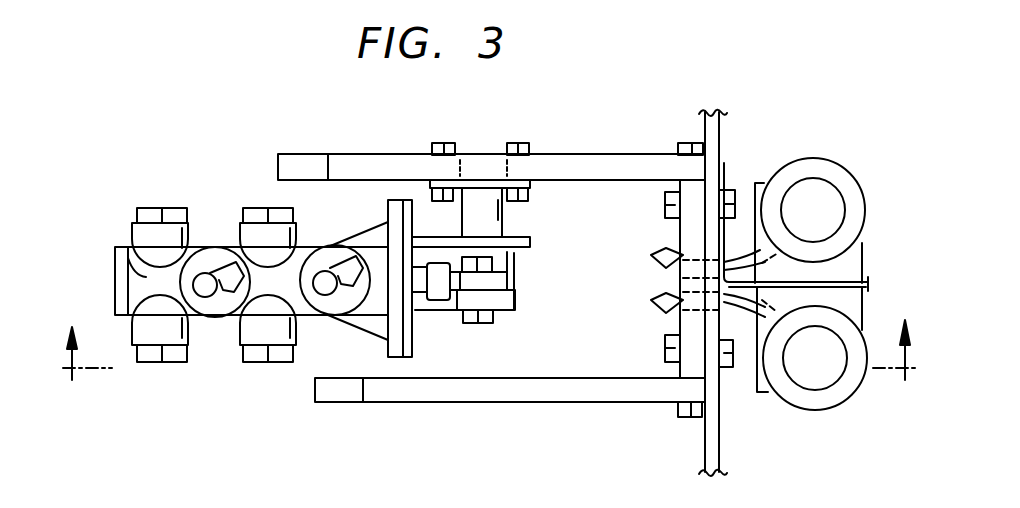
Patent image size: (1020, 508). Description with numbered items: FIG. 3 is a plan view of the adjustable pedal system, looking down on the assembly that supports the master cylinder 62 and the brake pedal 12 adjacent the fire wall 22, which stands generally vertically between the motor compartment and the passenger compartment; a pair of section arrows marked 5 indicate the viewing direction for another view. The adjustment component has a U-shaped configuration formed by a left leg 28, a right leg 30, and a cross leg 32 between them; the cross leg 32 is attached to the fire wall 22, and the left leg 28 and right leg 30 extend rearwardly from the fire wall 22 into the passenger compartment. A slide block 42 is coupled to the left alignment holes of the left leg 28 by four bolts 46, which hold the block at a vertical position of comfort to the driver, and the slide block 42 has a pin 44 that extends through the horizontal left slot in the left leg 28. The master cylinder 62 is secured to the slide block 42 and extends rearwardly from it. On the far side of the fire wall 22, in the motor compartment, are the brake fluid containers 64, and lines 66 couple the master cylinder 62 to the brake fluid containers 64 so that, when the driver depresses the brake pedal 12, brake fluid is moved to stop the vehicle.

The section line 5- 5 is at (485, 369).
The brake pedal 12 is at (443, 313).
The fire wall 22 is at (713, 137).
The left leg 28 is at (630, 154).
The right leg 30 is at (605, 402).
The cross leg 32 is at (680, 322).
The slide block 42 is at (470, 232).
The pin 44 is at (508, 215).
The bolts 46 is at (447, 142).
The master cylinder 62 is at (130, 250).
The brake fluid containers 64 is at (830, 225).
The lines 66 is at (333, 316).